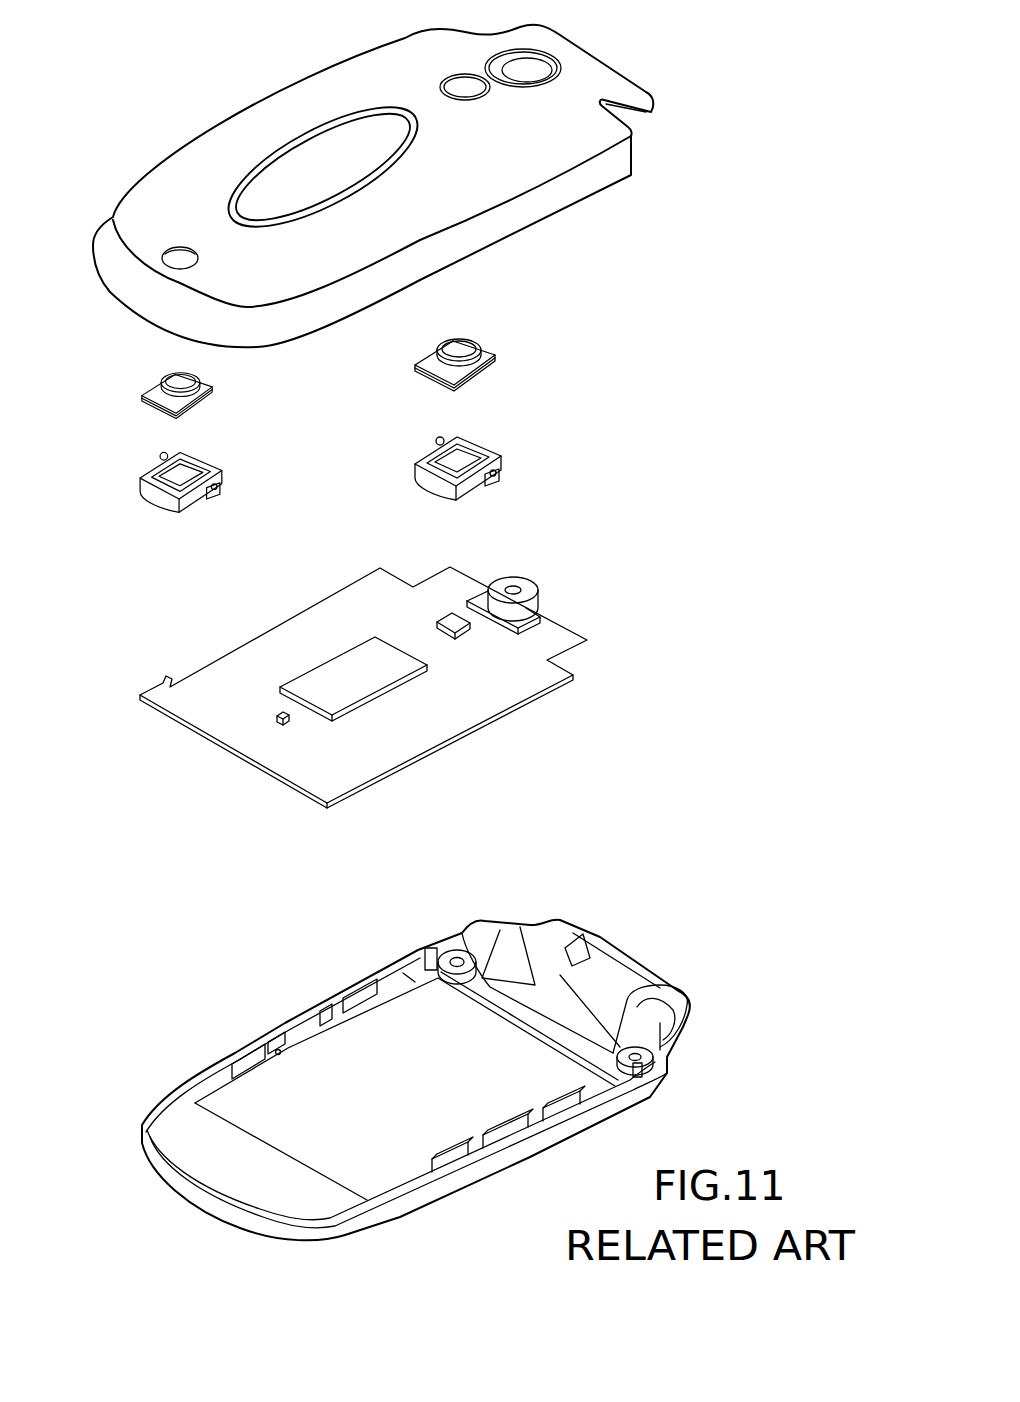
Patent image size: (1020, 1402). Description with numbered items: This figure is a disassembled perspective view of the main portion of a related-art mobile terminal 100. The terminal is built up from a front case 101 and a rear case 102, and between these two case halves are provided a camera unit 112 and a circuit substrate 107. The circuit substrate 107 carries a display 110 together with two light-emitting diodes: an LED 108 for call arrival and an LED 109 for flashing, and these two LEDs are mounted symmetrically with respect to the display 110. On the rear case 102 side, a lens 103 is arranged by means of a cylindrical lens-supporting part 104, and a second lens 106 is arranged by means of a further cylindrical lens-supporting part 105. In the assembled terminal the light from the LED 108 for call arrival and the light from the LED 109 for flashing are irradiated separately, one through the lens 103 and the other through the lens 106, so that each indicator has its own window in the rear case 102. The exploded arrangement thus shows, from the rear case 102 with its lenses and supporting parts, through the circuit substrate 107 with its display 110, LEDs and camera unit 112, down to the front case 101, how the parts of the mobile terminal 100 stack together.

The mobile terminal 100 is at (648, 783).
The front case 101 is at (610, 942).
The rear case 102 is at (600, 63).
The lens 103 is at (143, 400).
The cylindrical lens-supporting part 104 is at (146, 502).
The cylindrical lens-supporting part 105 is at (502, 450).
The lens 106 is at (493, 352).
The circuit substrate 107 is at (518, 708).
The LED for call arrival 108 is at (290, 725).
The LED for flashing 109 is at (455, 618).
The display 110 is at (345, 668).
The camera unit 112 is at (538, 583).